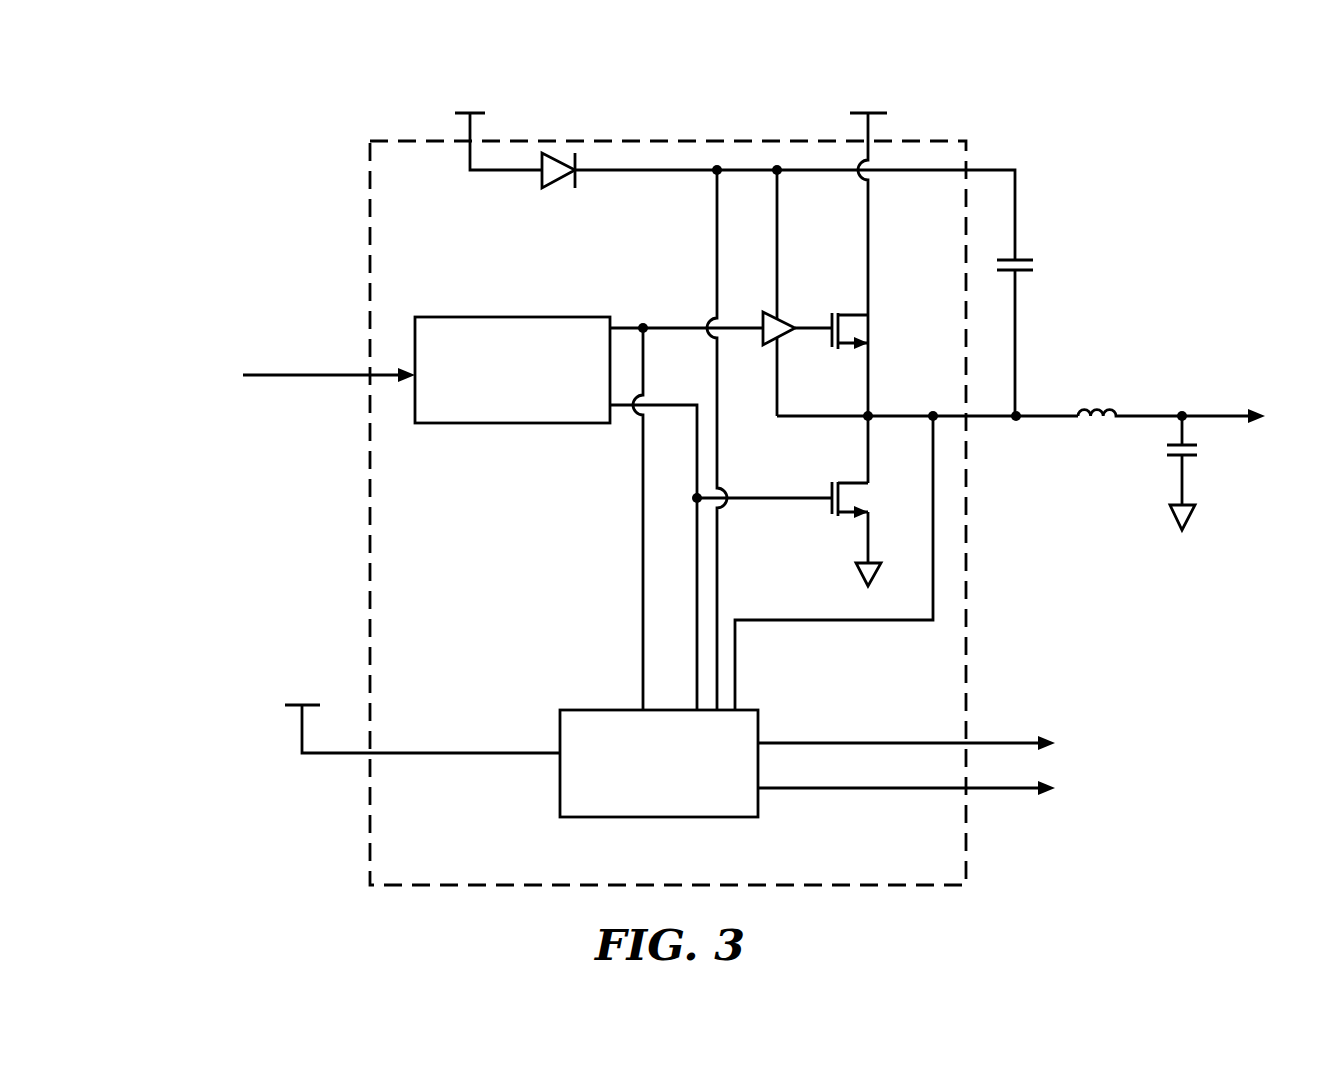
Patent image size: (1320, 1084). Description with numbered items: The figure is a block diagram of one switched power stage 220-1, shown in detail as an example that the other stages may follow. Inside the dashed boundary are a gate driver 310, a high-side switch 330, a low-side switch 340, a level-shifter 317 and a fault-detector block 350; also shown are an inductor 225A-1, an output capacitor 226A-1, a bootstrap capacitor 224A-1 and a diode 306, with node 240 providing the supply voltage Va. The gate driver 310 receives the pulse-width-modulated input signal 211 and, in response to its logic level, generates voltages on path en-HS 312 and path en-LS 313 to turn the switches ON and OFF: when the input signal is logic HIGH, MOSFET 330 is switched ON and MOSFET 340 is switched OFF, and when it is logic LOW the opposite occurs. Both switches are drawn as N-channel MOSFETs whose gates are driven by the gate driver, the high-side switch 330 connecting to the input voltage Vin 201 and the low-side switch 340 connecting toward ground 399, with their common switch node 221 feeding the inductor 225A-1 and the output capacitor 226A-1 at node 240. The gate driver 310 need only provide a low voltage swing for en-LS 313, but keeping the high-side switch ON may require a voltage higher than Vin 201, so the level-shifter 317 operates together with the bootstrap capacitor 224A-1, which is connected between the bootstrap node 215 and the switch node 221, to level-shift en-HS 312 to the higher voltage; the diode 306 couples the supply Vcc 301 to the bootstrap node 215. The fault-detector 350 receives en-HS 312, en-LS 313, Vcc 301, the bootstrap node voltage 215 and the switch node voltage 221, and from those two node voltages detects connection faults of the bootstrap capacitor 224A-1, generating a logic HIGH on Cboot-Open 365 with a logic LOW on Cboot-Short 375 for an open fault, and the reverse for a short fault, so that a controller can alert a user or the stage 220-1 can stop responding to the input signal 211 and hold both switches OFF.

The SPSA-1 220-1 is at (292, 88).
The voltage Vcc 301 is at (484, 112).
The diode 306 is at (572, 152).
The Vin 201 is at (864, 112).
The BOOTA-1 215 is at (1018, 170).
The bootstrap capacitor 224A-1 is at (1035, 262).
The gate driver 310 is at (512, 370).
The signal PWMA-1 211 is at (305, 373).
The path en-HS 312 is at (657, 325).
The path en-LS 313 is at (780, 502).
The level-shifter 317 is at (778, 321).
The high-side (HS) switch 330 is at (870, 328).
The SWA-1 221 is at (882, 412).
The low-side (LS) switch 340 is at (872, 497).
The ground 399 is at (856, 572).
The fault-detector block 350 is at (746, 616).
The Cboot-Open 365 is at (983, 740).
The Cboot-Short 375 is at (988, 790).
The inductor 225A-1 is at (1126, 374).
The node 240 is at (1245, 410).
The output capacitor 226A-1 is at (1170, 453).